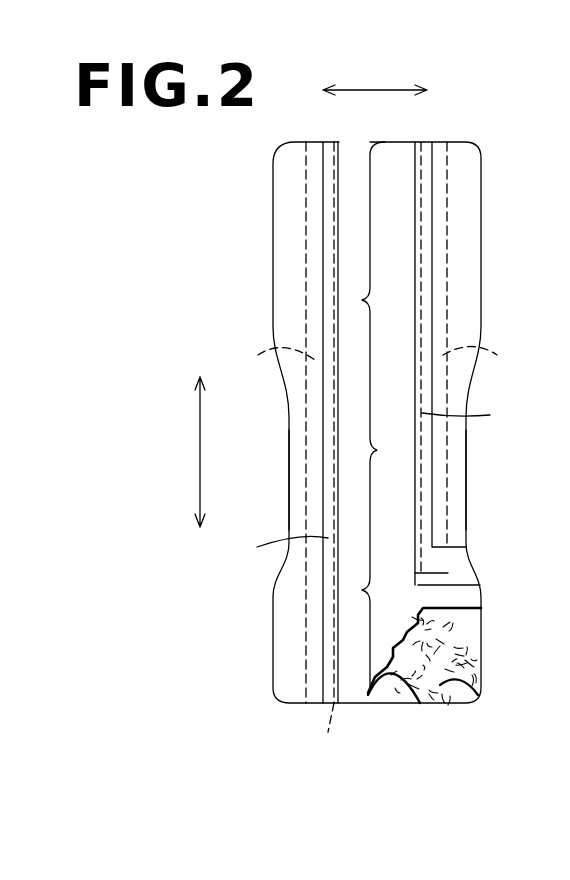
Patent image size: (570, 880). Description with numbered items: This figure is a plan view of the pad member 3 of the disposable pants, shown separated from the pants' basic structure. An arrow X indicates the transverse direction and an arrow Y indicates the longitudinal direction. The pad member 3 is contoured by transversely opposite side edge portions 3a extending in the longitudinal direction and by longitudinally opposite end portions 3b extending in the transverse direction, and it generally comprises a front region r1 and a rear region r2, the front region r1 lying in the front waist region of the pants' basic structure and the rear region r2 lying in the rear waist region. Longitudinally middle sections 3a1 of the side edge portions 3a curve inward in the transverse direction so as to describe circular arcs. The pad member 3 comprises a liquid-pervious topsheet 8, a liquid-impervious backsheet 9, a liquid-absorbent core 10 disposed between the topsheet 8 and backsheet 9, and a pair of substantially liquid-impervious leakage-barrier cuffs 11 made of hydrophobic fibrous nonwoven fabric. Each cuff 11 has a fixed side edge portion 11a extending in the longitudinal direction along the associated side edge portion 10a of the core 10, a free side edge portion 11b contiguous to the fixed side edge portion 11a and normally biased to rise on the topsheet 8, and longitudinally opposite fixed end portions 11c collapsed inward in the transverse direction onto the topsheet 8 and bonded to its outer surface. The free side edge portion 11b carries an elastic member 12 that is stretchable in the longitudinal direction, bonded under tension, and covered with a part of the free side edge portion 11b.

The pad member 3 is at (463, 141).
The side edge portions 3a is at (473, 258).
The longitudinally middle sections 3a1 is at (297, 477).
The end portions 3b is at (397, 140).
The topsheet 8 is at (410, 697).
The backsheet 9 is at (473, 635).
The core 10 is at (477, 693).
The side edge portion of the core 10a is at (467, 620).
The leakage-barrier cuffs 11 is at (302, 328).
The fixed side edge portion 11a is at (379, 365).
The free side edge portion 11b is at (374, 486).
The fixed end portions 11c is at (332, 157).
The elastic member 12 is at (478, 585).
The front region r1 is at (352, 593).
The rear region r2 is at (352, 314).
The transverse direction X is at (375, 90).
The longitudinal direction Y is at (200, 450).